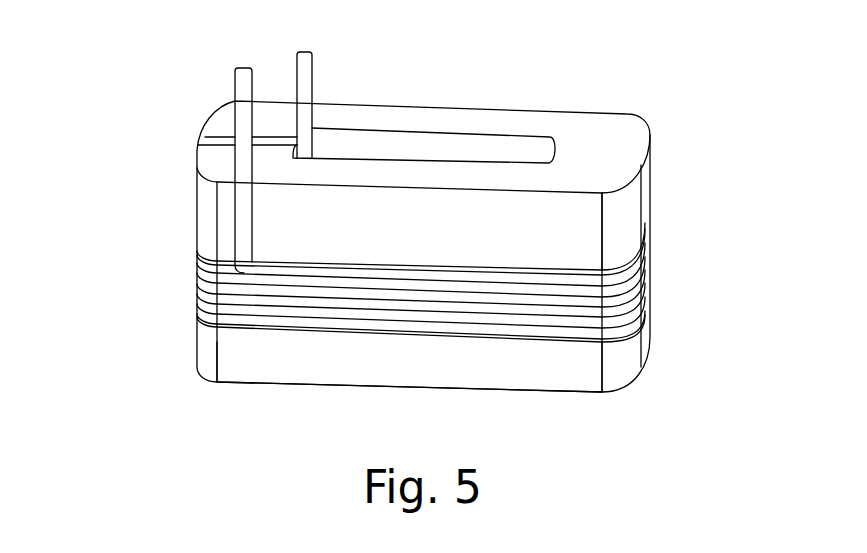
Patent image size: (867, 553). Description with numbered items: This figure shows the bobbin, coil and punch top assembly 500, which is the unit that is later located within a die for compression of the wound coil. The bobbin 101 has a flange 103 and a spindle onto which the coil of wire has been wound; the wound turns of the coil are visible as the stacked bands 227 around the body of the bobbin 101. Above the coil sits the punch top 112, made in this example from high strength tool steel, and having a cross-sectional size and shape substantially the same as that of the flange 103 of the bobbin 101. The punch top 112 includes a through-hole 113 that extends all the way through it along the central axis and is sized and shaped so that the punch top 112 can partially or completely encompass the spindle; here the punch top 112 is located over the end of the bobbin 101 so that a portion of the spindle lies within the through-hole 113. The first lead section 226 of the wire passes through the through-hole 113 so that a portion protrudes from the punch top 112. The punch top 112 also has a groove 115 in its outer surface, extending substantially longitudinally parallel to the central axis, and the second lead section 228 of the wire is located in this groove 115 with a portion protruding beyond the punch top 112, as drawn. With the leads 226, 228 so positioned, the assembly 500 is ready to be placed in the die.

The bobbin, coil and punch top assembly 500 is at (112, 103).
The bobbin 101 is at (660, 352).
The flange 103 is at (397, 372).
The punch top 112 is at (583, 220).
The through-hole 113 is at (515, 148).
The groove 115 is at (235, 228).
The first lead section 226 is at (304, 77).
The stacked layers 227 is at (512, 320).
The second lead section 228 is at (243, 90).